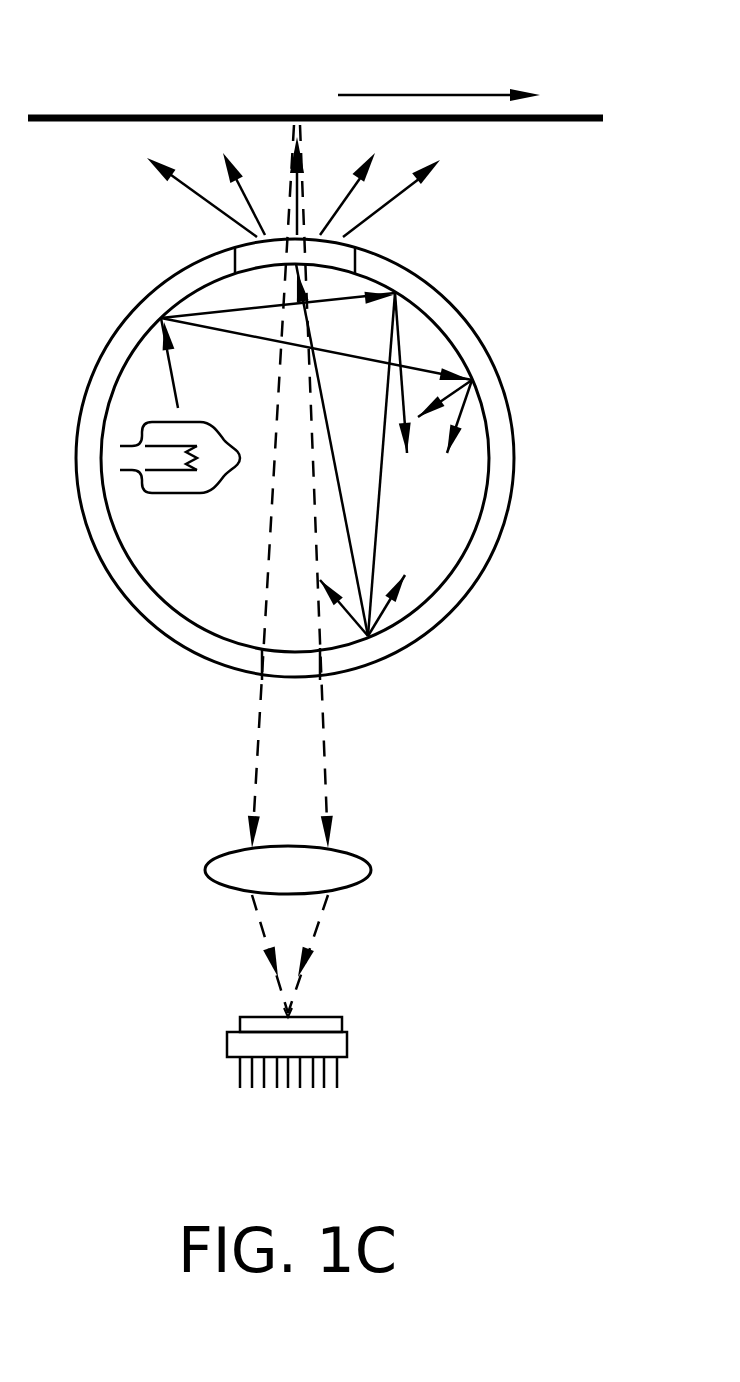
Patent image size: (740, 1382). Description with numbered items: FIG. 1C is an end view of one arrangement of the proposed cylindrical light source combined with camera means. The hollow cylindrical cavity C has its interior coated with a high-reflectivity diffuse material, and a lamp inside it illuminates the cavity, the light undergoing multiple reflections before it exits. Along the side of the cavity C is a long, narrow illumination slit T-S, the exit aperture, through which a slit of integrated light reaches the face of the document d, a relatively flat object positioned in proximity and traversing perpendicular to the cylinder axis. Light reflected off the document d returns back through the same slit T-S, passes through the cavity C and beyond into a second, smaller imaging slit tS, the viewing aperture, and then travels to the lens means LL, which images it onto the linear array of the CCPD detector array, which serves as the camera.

The document d is at (113, 114).
The illumination slit T-S is at (340, 258).
The cylindrical cavity C is at (520, 390).
The imaging slit tS is at (308, 667).
The lens means LL is at (372, 870).
The CCPD detector array CCPD is at (347, 1040).